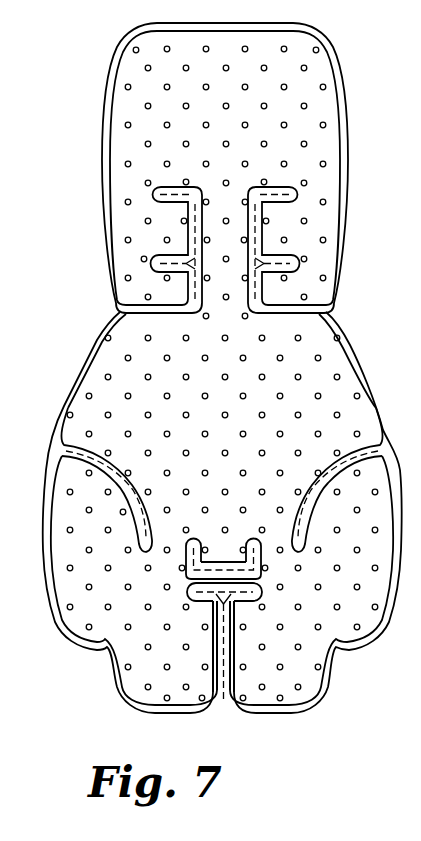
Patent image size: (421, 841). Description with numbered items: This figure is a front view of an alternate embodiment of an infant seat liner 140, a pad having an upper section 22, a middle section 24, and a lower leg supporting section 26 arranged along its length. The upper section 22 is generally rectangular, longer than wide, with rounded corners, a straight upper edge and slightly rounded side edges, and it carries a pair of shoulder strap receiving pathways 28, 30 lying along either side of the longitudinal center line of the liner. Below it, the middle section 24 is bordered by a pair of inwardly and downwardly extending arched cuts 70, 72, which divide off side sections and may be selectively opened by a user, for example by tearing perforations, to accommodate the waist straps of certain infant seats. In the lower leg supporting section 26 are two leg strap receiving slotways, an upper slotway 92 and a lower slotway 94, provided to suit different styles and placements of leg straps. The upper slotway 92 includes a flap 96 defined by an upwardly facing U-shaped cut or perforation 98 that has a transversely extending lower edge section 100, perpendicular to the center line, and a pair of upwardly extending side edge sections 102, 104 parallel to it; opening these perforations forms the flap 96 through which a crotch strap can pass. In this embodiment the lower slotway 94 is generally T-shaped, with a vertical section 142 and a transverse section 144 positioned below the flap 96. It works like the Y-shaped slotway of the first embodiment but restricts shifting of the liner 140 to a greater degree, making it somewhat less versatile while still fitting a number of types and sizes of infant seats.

The infant seat liner 140 is at (115, 43).
The upper section 22 is at (187, 125).
The middle section 24 is at (152, 362).
The lower leg supporting section 26 is at (83, 613).
The shoulder strap receiving pathway 28 is at (157, 242).
The shoulder strap receiving pathway 30 is at (292, 257).
The arched cut 70 is at (110, 477).
The arched cut 72 is at (323, 486).
The upper slotway 92 is at (142, 593).
The lower slotway 94 is at (193, 653).
The flap 96 is at (208, 550).
The U-shaped cut or perforation 98 is at (250, 532).
The lower edge section 100 is at (205, 568).
The side edge section 102 is at (187, 555).
The side edge section 104 is at (257, 556).
The vertical section 142 is at (225, 657).
The transverse section 144 is at (228, 596).